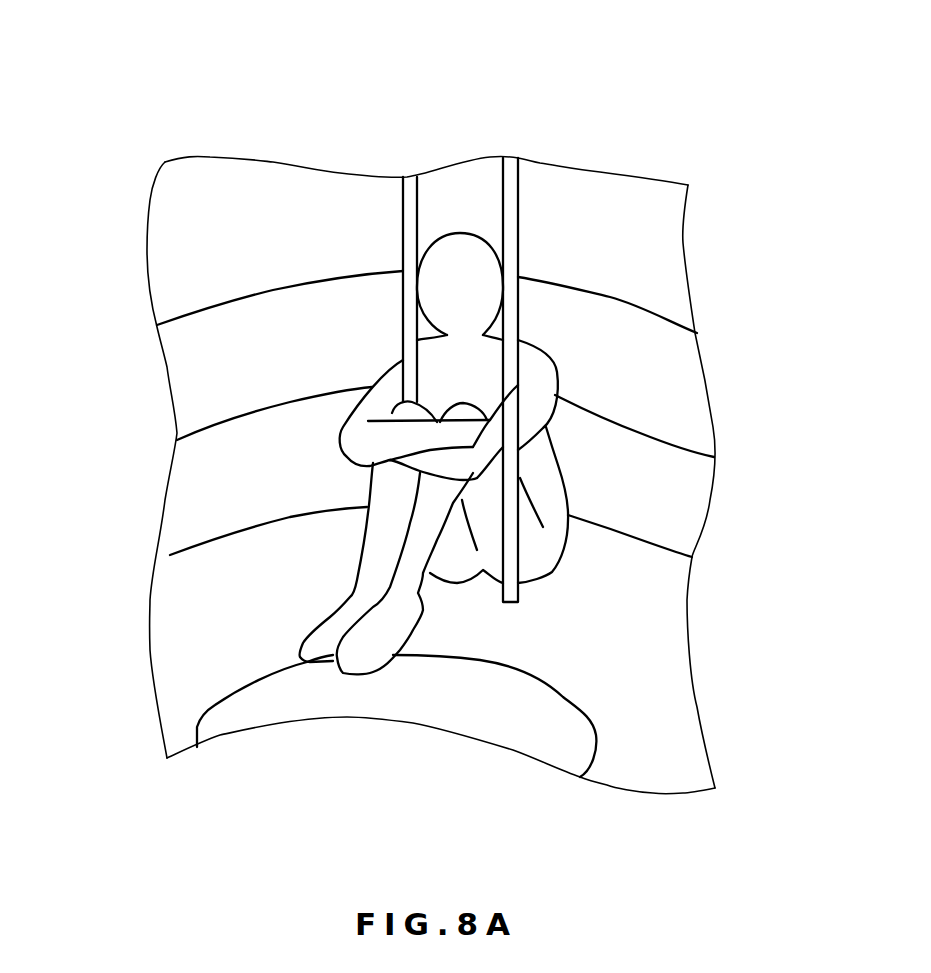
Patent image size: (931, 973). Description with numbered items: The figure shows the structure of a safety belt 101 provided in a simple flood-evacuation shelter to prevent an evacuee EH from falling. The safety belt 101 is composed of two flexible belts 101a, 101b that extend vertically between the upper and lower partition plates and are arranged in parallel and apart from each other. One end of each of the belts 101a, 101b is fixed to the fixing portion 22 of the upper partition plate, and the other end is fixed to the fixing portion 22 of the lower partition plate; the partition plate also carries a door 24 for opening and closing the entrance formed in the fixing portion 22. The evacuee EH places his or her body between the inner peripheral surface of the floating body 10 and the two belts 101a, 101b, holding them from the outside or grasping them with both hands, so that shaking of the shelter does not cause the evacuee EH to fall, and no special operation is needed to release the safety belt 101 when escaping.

The floating body 10 is at (693, 387).
The fixing portion 22 is at (610, 642).
The door 24 is at (238, 708).
The evacuee EH is at (537, 472).
The safety belt 101 is at (487, 302).
The belt 101a is at (412, 177).
The belt 101b is at (510, 174).